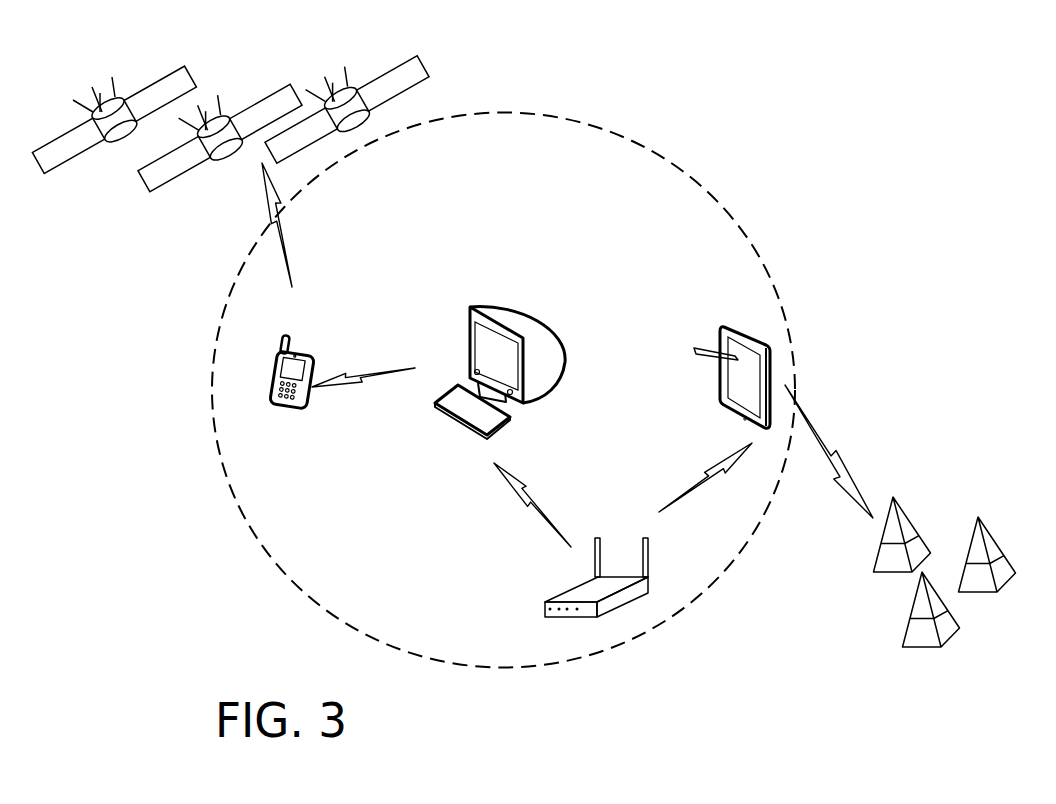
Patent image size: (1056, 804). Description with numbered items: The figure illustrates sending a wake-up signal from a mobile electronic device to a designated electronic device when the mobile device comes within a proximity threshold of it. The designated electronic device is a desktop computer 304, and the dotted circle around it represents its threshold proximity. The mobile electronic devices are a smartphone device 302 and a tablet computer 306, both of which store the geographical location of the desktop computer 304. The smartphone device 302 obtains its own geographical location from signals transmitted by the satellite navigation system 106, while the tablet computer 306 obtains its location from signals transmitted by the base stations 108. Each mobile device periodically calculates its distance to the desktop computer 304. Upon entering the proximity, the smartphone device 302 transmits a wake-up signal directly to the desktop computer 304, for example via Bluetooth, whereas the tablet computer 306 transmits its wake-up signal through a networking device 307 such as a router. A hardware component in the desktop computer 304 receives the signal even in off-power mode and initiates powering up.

The satellite navigation system 106 is at (140, 177).
The smartphone device 302 is at (300, 352).
The desktop computer 304 is at (520, 310).
The tablet computer 306 is at (748, 332).
The networking device 307 is at (543, 602).
The base stations 108 is at (958, 628).